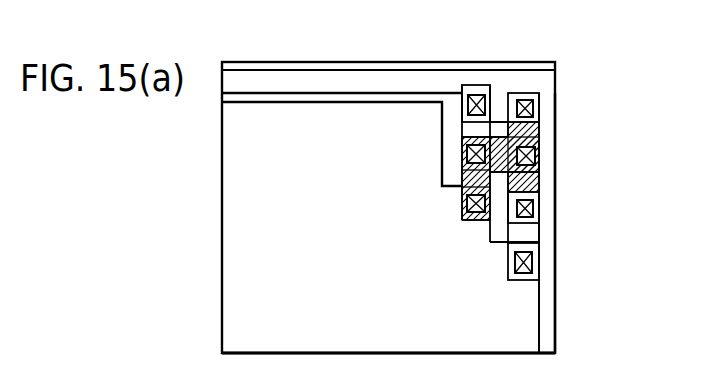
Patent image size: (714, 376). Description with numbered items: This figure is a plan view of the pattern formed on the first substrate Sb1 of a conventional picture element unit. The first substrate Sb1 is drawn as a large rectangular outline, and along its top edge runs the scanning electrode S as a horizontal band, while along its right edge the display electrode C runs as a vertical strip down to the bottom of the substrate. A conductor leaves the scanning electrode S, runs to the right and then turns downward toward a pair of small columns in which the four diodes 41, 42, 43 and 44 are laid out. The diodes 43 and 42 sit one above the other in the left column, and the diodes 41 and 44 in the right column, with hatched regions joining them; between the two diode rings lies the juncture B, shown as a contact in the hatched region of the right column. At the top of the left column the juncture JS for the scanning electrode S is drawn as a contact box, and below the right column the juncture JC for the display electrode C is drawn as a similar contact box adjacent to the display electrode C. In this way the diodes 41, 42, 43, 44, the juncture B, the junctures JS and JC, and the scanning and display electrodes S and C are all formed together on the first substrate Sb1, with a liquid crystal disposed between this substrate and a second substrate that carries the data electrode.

The juncture for scanning electrode JS is at (479, 96).
The scanning electrode S is at (556, 89).
The diode 41 is at (540, 115).
The diode 43 is at (466, 158).
The juncture between the diode rings B is at (539, 183).
The diode 44 is at (534, 209).
The diode 42 is at (466, 217).
The juncture for display electrode JC is at (533, 263).
The display electrode C is at (540, 318).
The first substrate Sb1 is at (555, 340).